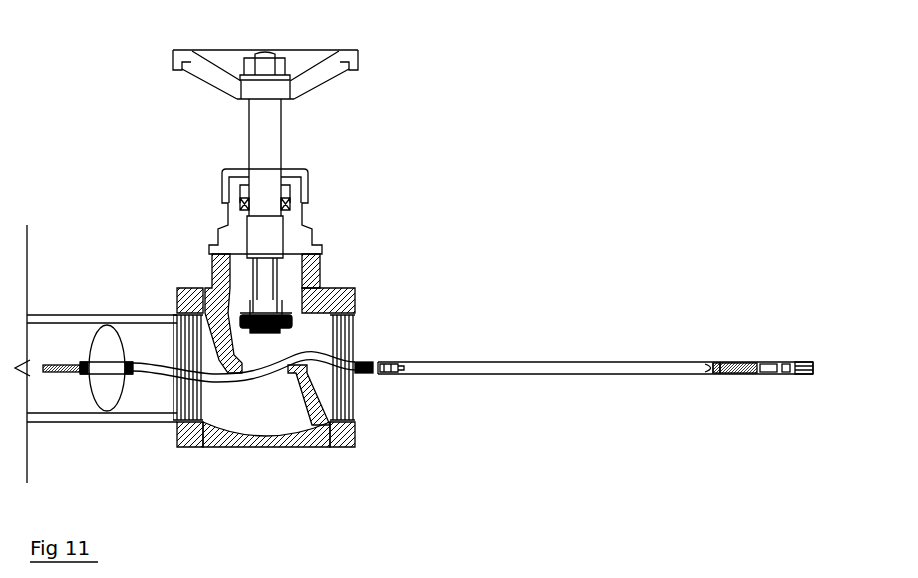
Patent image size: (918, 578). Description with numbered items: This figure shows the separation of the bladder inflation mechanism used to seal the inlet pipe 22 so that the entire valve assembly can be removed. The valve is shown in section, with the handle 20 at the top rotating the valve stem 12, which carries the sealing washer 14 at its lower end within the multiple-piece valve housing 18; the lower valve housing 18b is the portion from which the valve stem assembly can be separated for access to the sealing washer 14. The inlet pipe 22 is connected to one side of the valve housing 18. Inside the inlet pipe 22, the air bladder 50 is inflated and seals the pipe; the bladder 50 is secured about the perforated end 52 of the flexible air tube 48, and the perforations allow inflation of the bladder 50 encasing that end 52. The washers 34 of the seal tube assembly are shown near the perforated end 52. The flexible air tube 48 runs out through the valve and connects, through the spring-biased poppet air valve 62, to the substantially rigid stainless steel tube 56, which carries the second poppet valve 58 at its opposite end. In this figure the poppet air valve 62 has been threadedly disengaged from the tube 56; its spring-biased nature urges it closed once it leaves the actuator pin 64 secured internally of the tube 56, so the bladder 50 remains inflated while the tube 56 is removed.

The handle 20 is at (345, 48).
The valve stem 12 is at (284, 163).
The valve housing 18 is at (211, 222).
The sealing washer 14 is at (294, 321).
The lower valve housing 18b is at (361, 290).
The inlet pipe 22 is at (70, 316).
The washers 34 is at (66, 374).
The perforated end 52 is at (114, 362).
The air bladder 50 is at (122, 400).
The flexible air tube 48 is at (256, 388).
The poppet air valve 62 is at (373, 378).
The tube 56 is at (599, 378).
The actuator pin 64 is at (406, 360).
The second poppet valve 58 is at (796, 360).